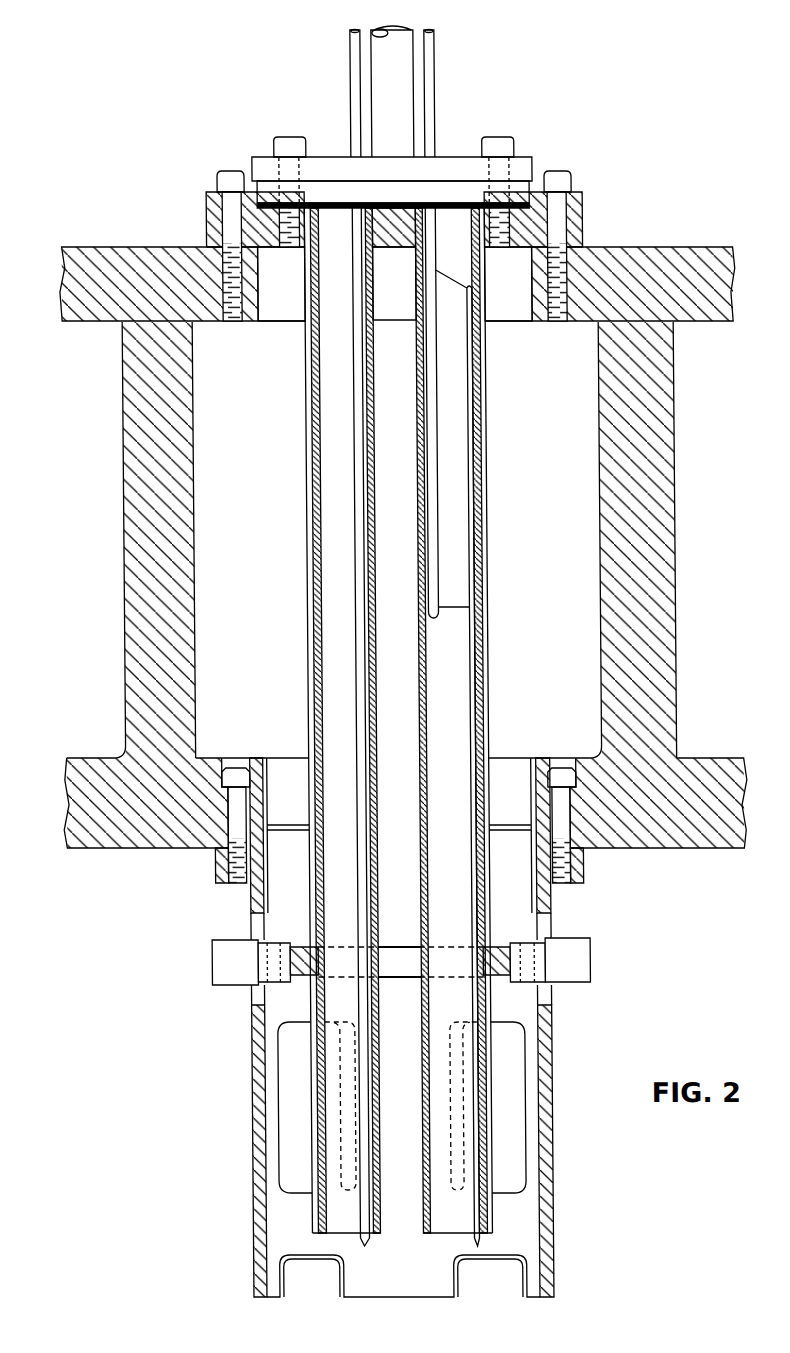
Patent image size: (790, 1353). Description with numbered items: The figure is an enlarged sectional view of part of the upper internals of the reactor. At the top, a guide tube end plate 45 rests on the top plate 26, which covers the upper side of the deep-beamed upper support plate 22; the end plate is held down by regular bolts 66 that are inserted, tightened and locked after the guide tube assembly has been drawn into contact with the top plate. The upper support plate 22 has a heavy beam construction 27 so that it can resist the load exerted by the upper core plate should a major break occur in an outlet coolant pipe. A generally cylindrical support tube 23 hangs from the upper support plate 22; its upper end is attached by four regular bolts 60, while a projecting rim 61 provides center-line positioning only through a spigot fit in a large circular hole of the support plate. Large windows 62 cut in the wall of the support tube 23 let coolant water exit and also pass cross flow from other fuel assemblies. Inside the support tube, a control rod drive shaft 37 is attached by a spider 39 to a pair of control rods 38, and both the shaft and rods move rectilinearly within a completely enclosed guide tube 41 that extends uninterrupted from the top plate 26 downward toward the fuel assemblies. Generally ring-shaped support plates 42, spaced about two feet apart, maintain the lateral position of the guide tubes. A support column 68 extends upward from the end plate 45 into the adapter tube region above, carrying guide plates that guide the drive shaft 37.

The upper support plate 22 is at (728, 848).
The support tube 23 is at (547, 1040).
The top plate 26 is at (676, 247).
The heavy beam construction 27 is at (674, 540).
The control rod drive shaft 37 is at (437, 74).
The control rod 38 is at (468, 1224).
The spider 39 is at (457, 460).
The guide tube 41 is at (315, 640).
The support plate 42 is at (500, 946).
The end plate 45 is at (580, 230).
The regular bolt 60 is at (578, 882).
The projecting rim 61 is at (505, 135).
The window 62 is at (519, 1100).
The regular bolt 66 is at (236, 170).
The support column 68 is at (412, 32).